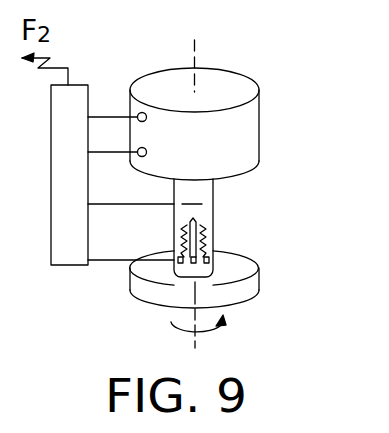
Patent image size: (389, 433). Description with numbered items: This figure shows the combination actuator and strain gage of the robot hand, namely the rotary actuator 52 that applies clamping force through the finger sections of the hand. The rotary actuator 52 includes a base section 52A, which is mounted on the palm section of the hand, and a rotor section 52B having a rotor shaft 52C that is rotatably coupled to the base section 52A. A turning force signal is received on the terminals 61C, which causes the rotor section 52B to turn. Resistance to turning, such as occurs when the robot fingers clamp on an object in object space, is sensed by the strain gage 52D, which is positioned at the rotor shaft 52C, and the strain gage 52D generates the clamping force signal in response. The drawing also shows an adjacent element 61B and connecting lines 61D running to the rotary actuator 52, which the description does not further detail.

The rotary actuator 52 is at (245, 194).
The base section 52A is at (245, 128).
The rotor section 52B is at (254, 287).
The rotor shaft 52C is at (206, 195).
The strain gage 52D is at (207, 231).
The sensor body 61B is at (58, 180).
The terminals 61C is at (88, 152).
The connection lines 61D is at (88, 205).